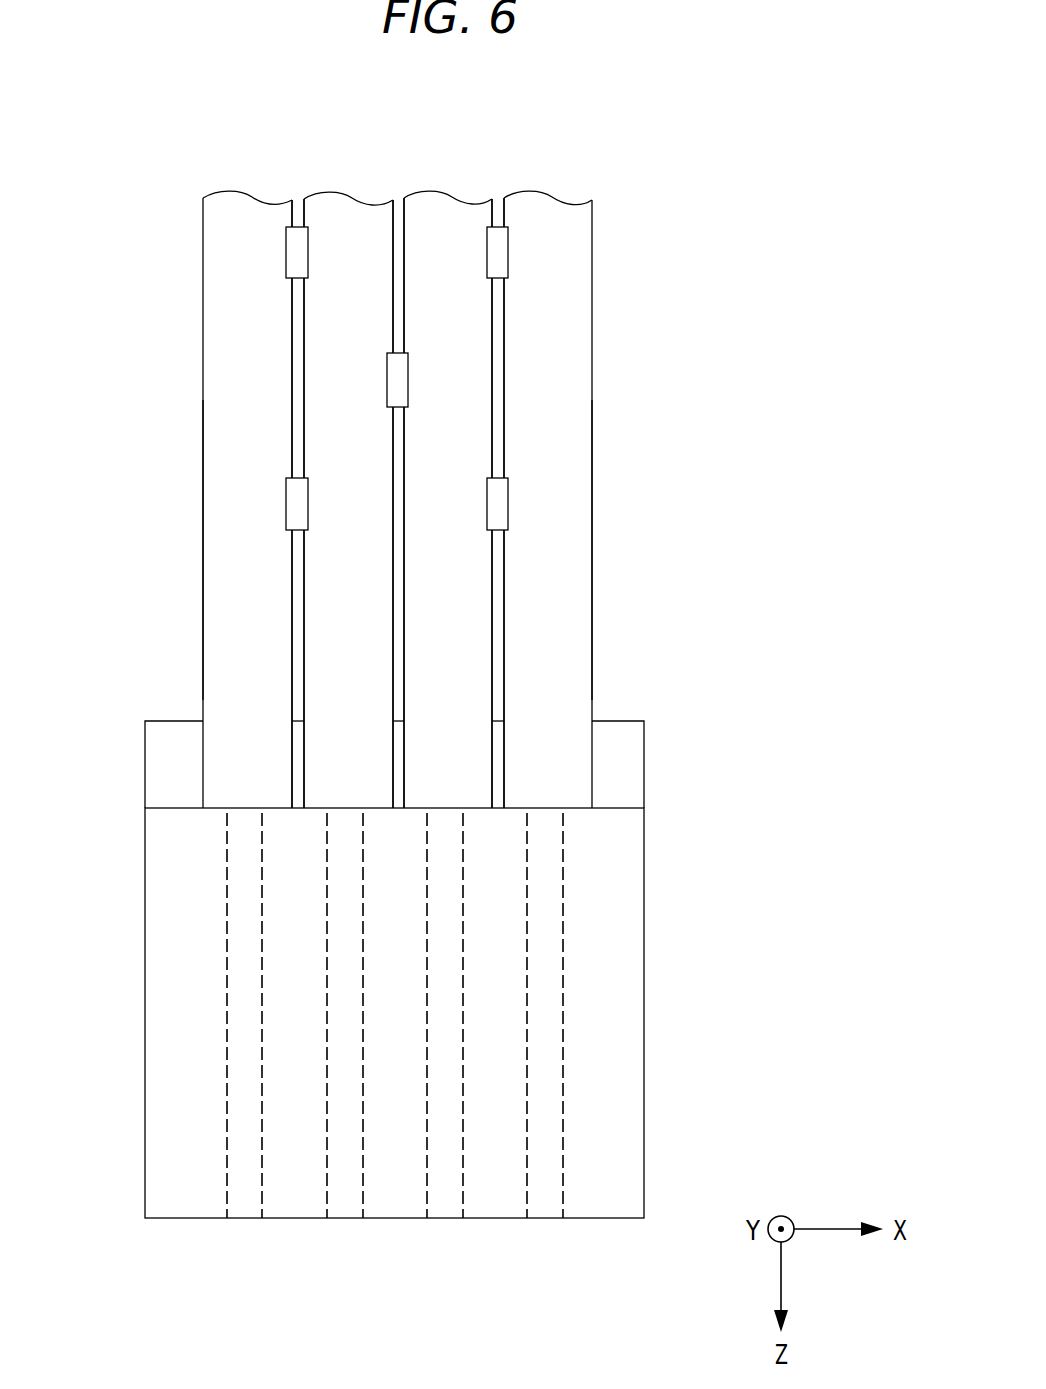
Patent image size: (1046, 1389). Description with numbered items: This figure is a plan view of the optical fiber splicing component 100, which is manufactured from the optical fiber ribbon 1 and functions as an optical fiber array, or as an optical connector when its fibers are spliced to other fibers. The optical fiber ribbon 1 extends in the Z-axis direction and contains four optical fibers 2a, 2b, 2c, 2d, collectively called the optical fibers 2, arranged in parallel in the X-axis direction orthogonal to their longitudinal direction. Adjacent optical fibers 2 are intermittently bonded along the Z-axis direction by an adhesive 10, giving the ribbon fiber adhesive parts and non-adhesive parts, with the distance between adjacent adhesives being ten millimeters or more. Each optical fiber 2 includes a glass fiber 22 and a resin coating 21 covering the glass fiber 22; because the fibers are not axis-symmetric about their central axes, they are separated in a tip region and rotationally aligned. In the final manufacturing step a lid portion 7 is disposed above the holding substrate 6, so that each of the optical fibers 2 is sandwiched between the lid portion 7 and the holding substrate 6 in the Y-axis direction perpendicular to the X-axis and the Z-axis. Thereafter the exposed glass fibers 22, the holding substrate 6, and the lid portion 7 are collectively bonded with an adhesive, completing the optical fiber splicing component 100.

The optical fiber splicing component 100 is at (100, 738).
The optical fiber ribbon 1 is at (150, 310).
The optical fibers 2 is at (416, 458).
The optical fiber 2a is at (232, 205).
The optical fiber 2b is at (335, 205).
The optical fiber 2c is at (440, 205).
The optical fiber 2d is at (557, 207).
The adhesive 10 is at (408, 372).
The resin coating 21 is at (202, 545).
The glass fiber 22 is at (227, 1172).
The holding substrate 6 is at (635, 760).
The lid portion 7 is at (627, 927).